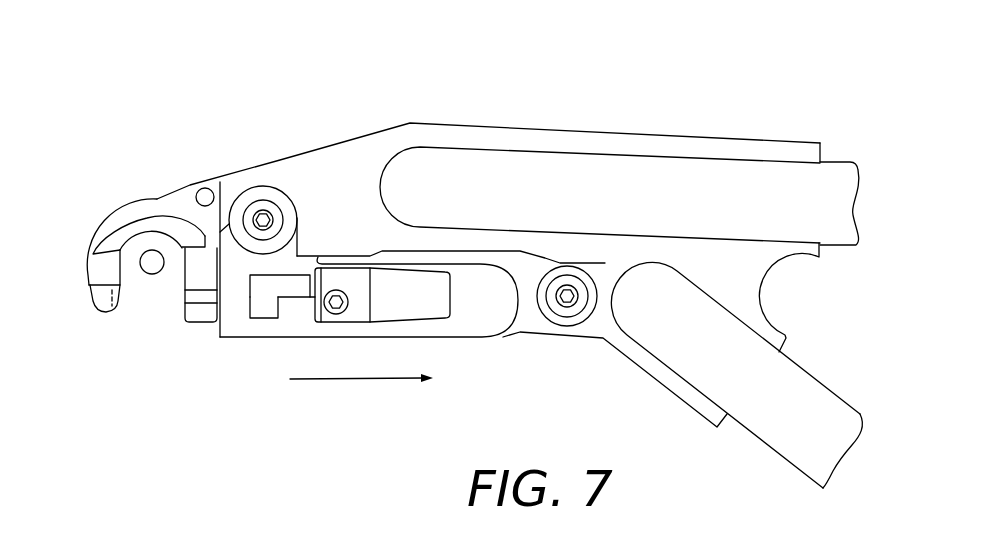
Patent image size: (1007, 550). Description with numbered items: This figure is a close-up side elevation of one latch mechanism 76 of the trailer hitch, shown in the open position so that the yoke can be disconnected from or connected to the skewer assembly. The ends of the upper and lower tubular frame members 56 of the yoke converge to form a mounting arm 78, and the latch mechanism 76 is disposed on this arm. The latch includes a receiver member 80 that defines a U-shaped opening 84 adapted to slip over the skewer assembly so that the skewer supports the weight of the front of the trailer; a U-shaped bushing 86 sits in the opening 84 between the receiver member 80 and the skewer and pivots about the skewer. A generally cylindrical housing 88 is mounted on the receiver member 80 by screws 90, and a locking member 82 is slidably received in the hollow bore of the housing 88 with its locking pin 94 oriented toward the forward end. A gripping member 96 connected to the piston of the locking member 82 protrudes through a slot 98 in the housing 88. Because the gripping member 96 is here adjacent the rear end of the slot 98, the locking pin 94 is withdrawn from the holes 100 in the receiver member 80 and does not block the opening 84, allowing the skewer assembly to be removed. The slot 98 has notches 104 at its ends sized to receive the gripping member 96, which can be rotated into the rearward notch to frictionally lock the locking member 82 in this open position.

The latch mechanism 76 is at (176, 52).
The mounting arm 78 is at (573, 130).
The frame member 56 is at (840, 168).
The receiver member 80 is at (115, 200).
The locking member 82 is at (231, 408).
The U-shaped opening 84 is at (134, 344).
The U-shaped bushing 86 is at (90, 272).
The cylindrical housing 88 is at (442, 340).
The screw 90 is at (258, 197).
The locking pin 94 is at (220, 323).
The gripping member 96 is at (452, 297).
The slot 98 is at (289, 288).
The holes 100 is at (123, 292).
The notch 104 is at (259, 309).